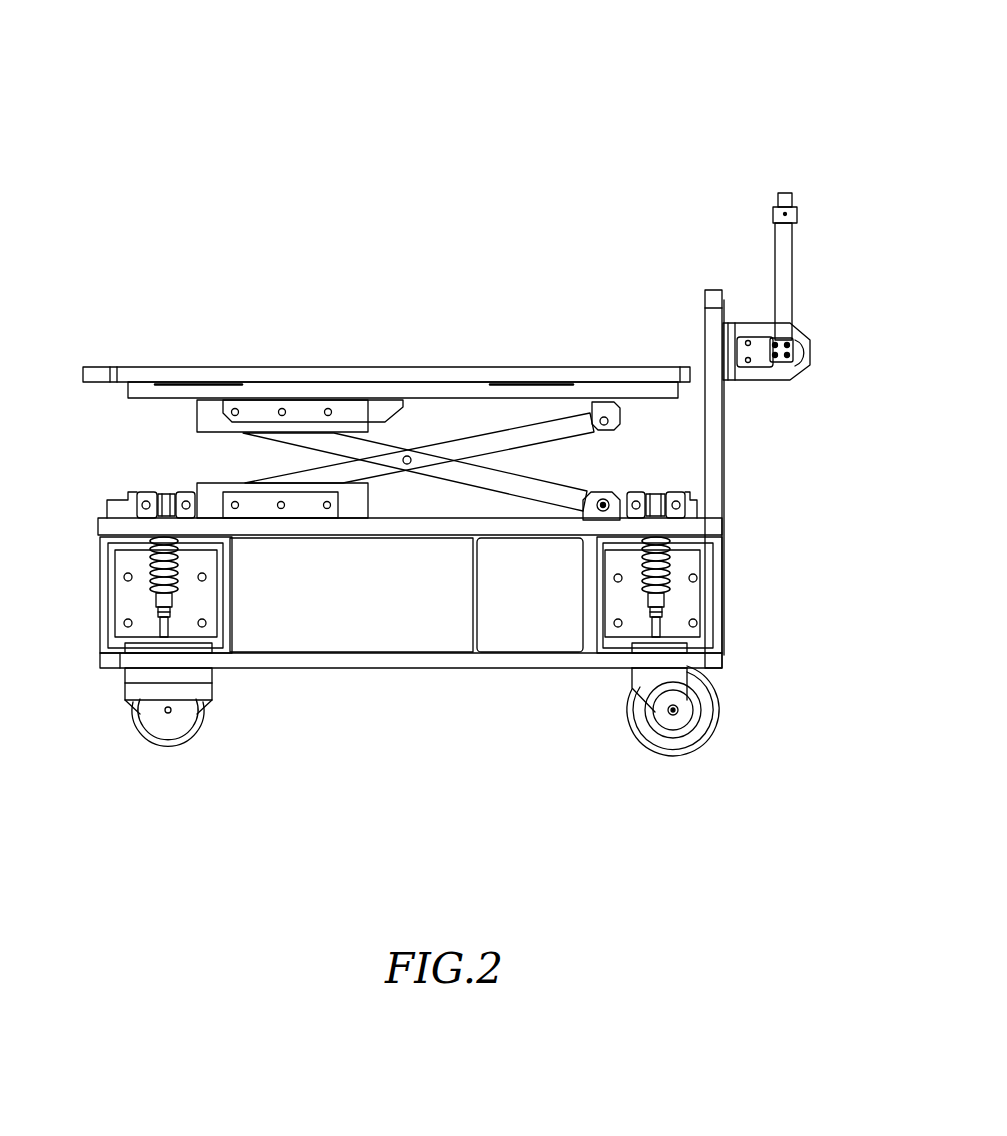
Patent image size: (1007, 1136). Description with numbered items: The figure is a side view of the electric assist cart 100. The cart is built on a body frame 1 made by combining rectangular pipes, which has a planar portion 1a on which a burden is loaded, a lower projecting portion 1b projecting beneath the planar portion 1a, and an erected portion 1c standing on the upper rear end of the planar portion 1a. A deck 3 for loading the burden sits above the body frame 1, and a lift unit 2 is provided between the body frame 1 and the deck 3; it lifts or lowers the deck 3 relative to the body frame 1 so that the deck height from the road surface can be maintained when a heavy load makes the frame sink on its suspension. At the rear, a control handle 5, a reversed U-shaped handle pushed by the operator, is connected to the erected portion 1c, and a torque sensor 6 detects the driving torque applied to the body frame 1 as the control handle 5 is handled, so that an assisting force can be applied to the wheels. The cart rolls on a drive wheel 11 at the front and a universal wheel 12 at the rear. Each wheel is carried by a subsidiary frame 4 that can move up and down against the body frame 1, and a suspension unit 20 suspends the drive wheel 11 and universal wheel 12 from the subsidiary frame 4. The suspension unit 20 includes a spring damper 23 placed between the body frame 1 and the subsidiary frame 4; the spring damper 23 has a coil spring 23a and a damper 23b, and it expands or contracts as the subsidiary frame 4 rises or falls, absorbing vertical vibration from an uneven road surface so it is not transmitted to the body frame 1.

The electric assist cart 100 is at (818, 96).
The body frame 1 is at (476, 482).
The planar portion 1a is at (718, 526).
The lower projecting portion 1b is at (720, 605).
The erected portion 1c is at (712, 455).
The lift unit 2 is at (430, 424).
The deck 3 is at (138, 367).
The subsidiary frame 4 is at (191, 628).
The control handle 5 is at (800, 211).
The torque sensor 6 is at (806, 352).
The drive wheel 11 is at (168, 748).
The universal wheel 12 is at (667, 745).
The suspension unit 20 is at (371, 675).
The spring damper 23 is at (376, 675).
The coil spring 23a is at (167, 578).
The damper 23b is at (167, 600).